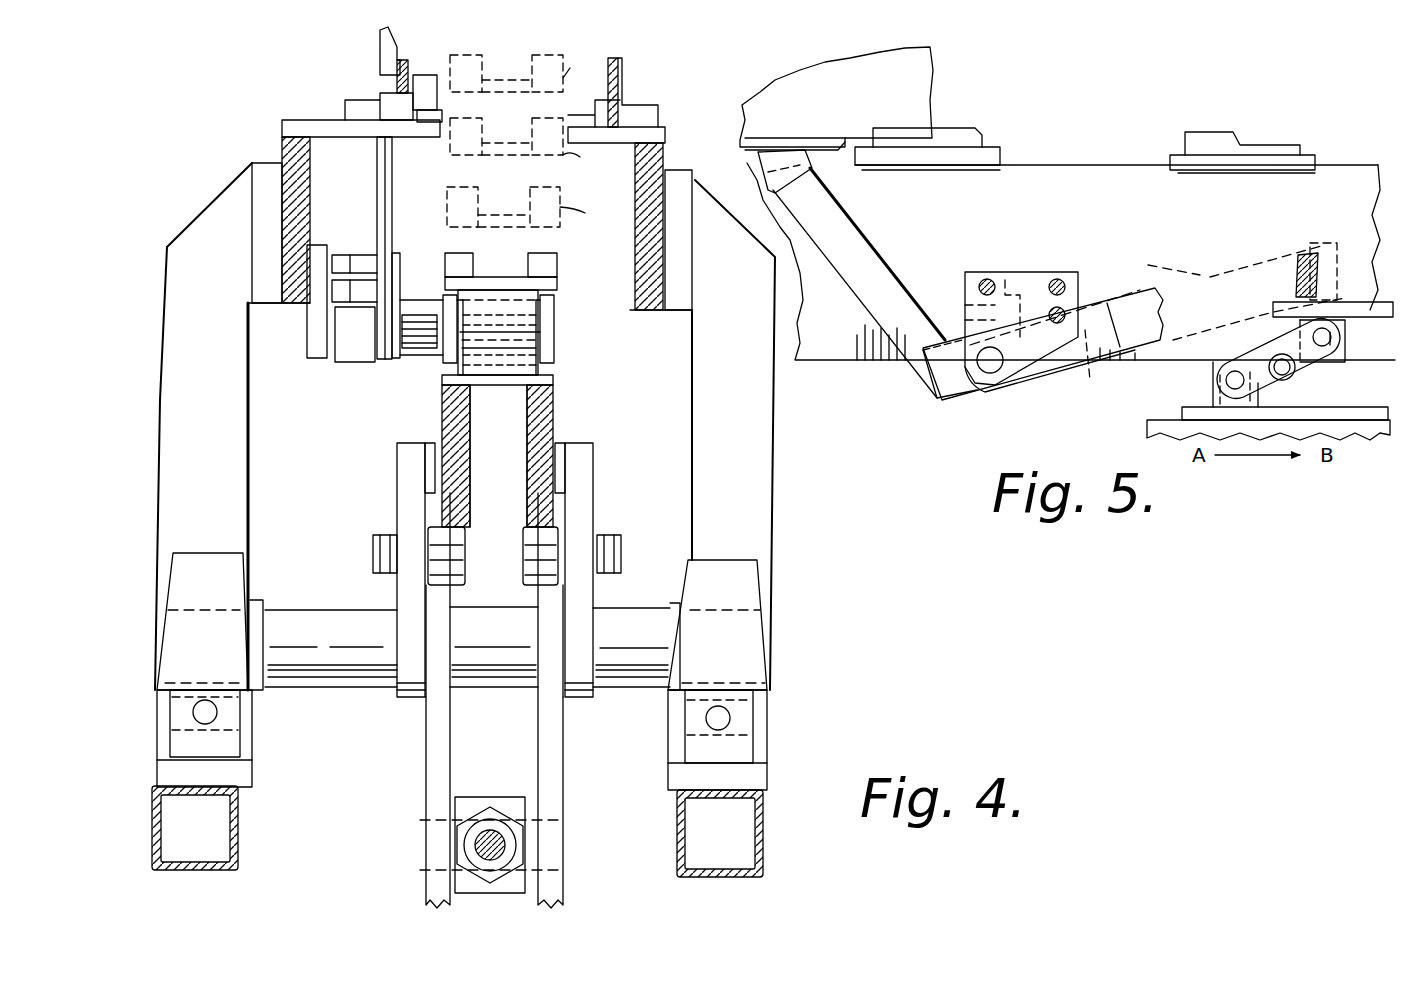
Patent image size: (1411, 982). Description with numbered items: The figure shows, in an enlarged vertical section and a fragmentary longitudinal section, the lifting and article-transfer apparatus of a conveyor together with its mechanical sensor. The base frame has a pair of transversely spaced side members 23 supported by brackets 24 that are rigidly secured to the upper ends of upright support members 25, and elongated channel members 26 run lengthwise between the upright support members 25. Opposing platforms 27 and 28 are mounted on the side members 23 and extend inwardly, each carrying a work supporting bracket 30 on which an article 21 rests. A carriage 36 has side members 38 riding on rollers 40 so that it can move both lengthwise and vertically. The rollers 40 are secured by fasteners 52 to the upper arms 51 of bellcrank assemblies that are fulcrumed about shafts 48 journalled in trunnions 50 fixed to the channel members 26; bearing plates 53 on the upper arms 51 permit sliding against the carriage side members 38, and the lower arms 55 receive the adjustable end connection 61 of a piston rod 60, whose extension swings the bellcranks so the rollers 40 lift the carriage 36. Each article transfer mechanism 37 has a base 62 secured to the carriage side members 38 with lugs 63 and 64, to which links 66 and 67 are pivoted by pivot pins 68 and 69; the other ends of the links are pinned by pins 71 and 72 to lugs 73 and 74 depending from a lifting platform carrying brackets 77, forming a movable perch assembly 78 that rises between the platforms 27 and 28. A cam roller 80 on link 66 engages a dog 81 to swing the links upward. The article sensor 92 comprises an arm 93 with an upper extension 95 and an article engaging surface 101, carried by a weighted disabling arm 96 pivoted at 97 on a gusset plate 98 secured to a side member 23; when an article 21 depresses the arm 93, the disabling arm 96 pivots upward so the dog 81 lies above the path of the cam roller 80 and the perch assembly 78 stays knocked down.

In FIG. 5, the article 21 is at (917, 75).
In FIG. 5, the side members 23 is at (1130, 165).
In FIG. 4, the brackets 24 is at (255, 187).
In FIG. 4, the upright support members 25 is at (185, 330).
In FIG. 4, the channel members 26 is at (240, 832).
In FIG. 4, the platform 27 is at (320, 120).
In FIG. 4, the platform 28 is at (665, 127).
In FIG. 5, the platform 28 is at (997, 148).
In FIG. 5, the work supporting bracket 30 is at (968, 127).
In FIG. 4, the carriage 36 is at (433, 437).
In FIG. 4, the article transfer mechanism 37 is at (560, 305).
In FIG. 4, the carriage side members 38 is at (455, 430).
In FIG. 4, the rollers 40 is at (535, 540).
In FIG. 4, the shafts 48 is at (325, 618).
In FIG. 4, the trunnions 50 is at (185, 575).
In FIG. 4, the upper arms 51 is at (405, 510).
In FIG. 4, the fasteners 52 is at (372, 555).
In FIG. 4, the bearing plates 53 is at (430, 460).
In FIG. 4, the lower arms 55 is at (428, 735).
In FIG. 4, the piston rod 60 is at (520, 845).
In FIG. 4, the adjustable end connection 61 is at (452, 845).
In FIG. 4, the base 62 is at (433, 415).
In FIG. 5, the lug 63 is at (1185, 408).
In FIG. 4, the lug 64 is at (463, 420).
In FIG. 5, the link 66 is at (1240, 355).
In FIG. 4, the link 67 is at (443, 318).
In FIG. 5, the link 67 is at (1357, 302).
In FIG. 5, the pivot pin 68 is at (1233, 378).
In FIG. 4, the pivot pin 69 is at (555, 403).
In FIG. 5, the pin 71 is at (1352, 350).
In FIG. 4, the pin 72 is at (545, 333).
In FIG. 5, the lug 73 is at (1350, 325).
In FIG. 4, the lug 74 is at (492, 300).
In FIG. 4, the brackets 77 is at (445, 265).
In FIG. 4, the movable perch assembly 78 is at (500, 137).
In FIG. 4, the cam roller 80 is at (430, 357).
In FIG. 5, the cam roller 80 is at (1290, 378).
In FIG. 4, the dog 81 is at (417, 360).
In FIG. 5, the dog 81 is at (1318, 250).
In FIG. 4, the article sensor 92 is at (375, 158).
In FIG. 5, the article sensor 92 is at (862, 217).
In FIG. 4, the arm 93 is at (383, 183).
In FIG. 5, the arm 93 is at (860, 270).
In FIG. 4, the upper extension 95 is at (425, 92).
In FIG. 5, the upper extension 95 is at (798, 150).
In FIG. 4, the disabling arm 96 is at (347, 362).
In FIG. 5, the disabling arm 96 is at (1150, 300).
In FIG. 5, the pivot 97 is at (992, 375).
In FIG. 4, the gusset plate 98 is at (320, 245).
In FIG. 5, the gusset plate 98 is at (1040, 275).
In FIG. 4, the article engaging surface 101 is at (425, 75).
In FIG. 5, the article engaging surface 101 is at (768, 150).